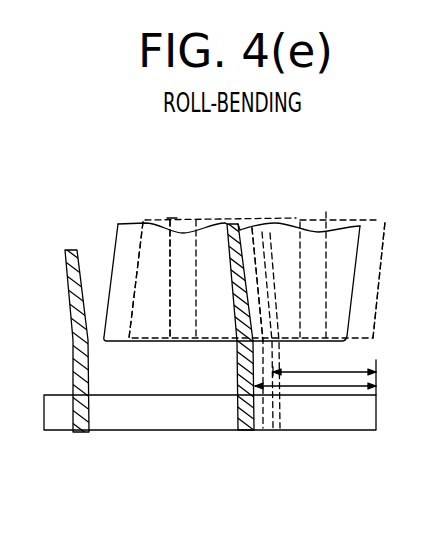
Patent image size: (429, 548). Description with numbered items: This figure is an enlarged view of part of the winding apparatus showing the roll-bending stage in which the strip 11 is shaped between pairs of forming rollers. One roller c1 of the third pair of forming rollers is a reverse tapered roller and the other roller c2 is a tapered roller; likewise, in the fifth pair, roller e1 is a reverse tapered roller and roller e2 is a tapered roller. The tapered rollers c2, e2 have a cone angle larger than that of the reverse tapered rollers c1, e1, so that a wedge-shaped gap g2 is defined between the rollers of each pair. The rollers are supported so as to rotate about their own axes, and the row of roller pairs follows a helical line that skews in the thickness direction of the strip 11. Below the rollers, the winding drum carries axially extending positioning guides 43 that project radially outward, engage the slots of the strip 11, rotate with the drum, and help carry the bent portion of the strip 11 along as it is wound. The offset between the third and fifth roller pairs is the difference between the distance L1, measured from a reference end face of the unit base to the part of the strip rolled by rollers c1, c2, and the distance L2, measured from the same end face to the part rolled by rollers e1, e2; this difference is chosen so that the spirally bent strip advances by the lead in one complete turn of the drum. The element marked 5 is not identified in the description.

The workpiece sheet 5 is at (236, 307).
The strip 11 is at (73, 365).
The positioning guides 43 is at (131, 420).
The reverse tapered roller of the fifth pair of forming rollers e1 is at (130, 238).
The reverse tapered roller of the third pair of forming rollers c1 is at (183, 222).
The wedge-shaped gap g2 is at (232, 226).
The tapered roller of the fifth pair of forming rollers e2 is at (283, 238).
The tapered roller of the third pair of forming rollers c2 is at (378, 226).
The distance L1 is at (324, 370).
The distance L2 is at (322, 388).